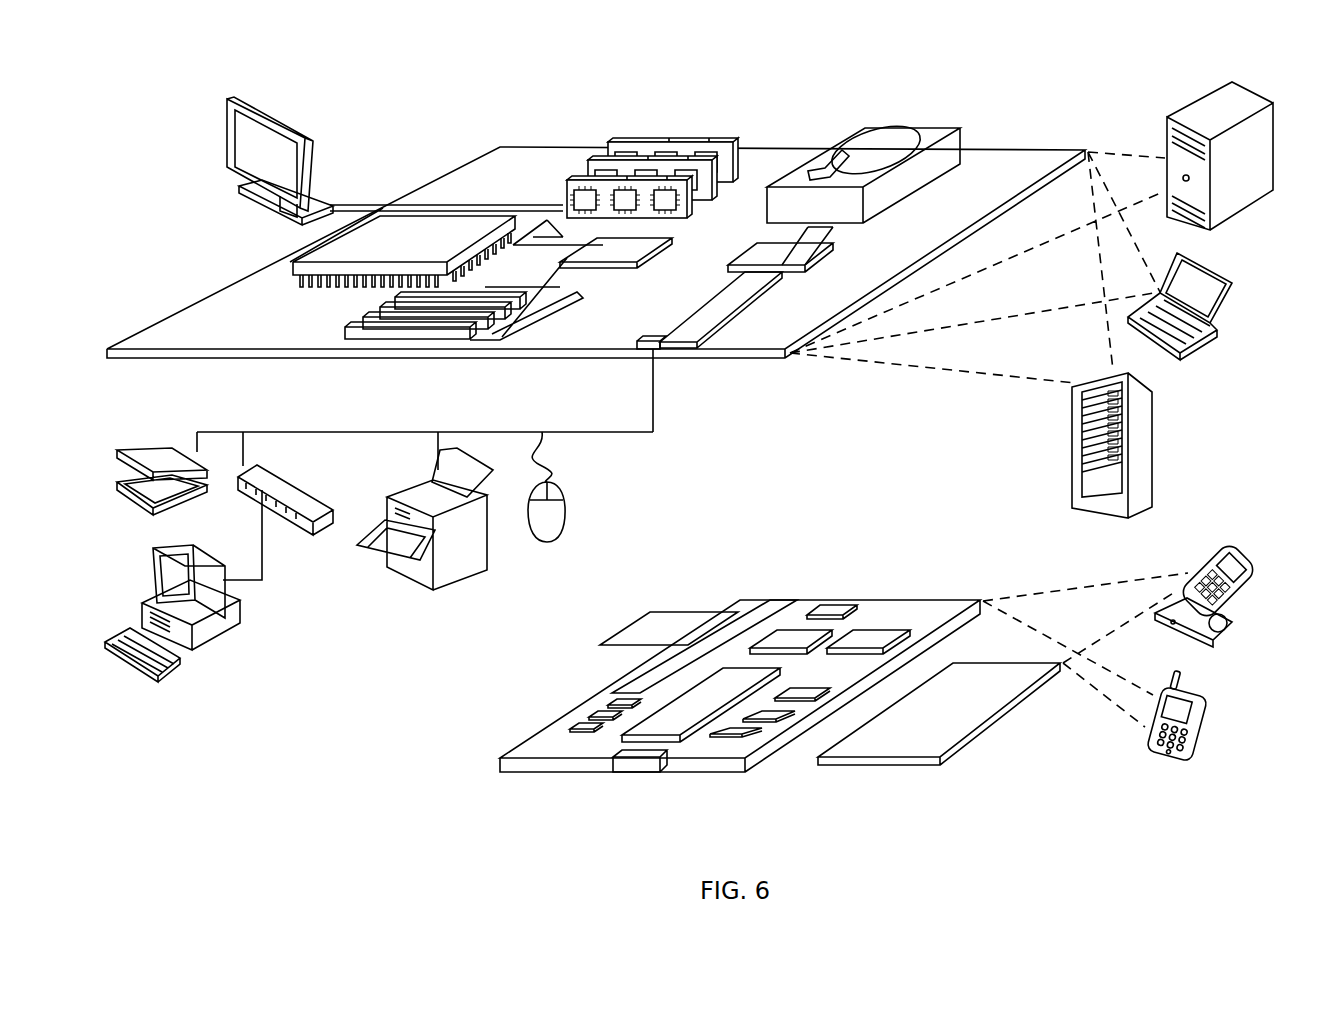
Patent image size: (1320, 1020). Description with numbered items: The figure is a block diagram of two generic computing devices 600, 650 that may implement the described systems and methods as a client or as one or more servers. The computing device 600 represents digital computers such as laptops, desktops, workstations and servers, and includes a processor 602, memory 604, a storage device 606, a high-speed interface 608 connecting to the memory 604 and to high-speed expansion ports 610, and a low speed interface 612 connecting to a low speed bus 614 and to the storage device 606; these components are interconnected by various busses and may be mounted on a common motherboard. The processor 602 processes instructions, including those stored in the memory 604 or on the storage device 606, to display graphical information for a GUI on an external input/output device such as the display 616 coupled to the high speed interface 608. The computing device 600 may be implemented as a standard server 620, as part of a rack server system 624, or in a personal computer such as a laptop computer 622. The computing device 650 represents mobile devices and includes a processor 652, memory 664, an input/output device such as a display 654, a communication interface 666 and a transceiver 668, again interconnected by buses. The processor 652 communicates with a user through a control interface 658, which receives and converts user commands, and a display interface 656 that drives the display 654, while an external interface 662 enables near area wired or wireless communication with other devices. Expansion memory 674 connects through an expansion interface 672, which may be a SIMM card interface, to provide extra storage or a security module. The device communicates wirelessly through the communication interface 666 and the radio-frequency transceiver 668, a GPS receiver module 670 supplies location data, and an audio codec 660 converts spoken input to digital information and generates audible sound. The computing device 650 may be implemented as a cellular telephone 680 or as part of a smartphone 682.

The computing device 600 is at (423, 124).
The processor 602 is at (302, 266).
The memory 604 is at (617, 142).
The storage device 606 is at (858, 128).
The high-speed interface 608 is at (597, 250).
The high-speed expansion ports 610 is at (362, 318).
The low speed interface 612 is at (764, 252).
The low speed bus 614 is at (657, 348).
The display 616 is at (236, 96).
The standard server 620 is at (1167, 133).
The laptop computer 622 is at (1233, 278).
The rack server system 624 is at (1074, 468).
The computing device 650 is at (479, 766).
The processor 652 is at (675, 727).
The display 654 is at (907, 746).
The display interface 656 is at (740, 733).
The control interface 658 is at (776, 712).
The audio codec 660 is at (800, 692).
The external interface 662 is at (638, 760).
The memory 664 is at (593, 721).
The communication interface 666 is at (792, 638).
The transceiver 668 is at (868, 638).
The GPS receiver module 670 is at (842, 602).
The expansion interface 672 is at (717, 613).
The expansion memory 674 is at (647, 612).
The cellular telephone 680 is at (1193, 525).
The smartphone 682 is at (1147, 727).